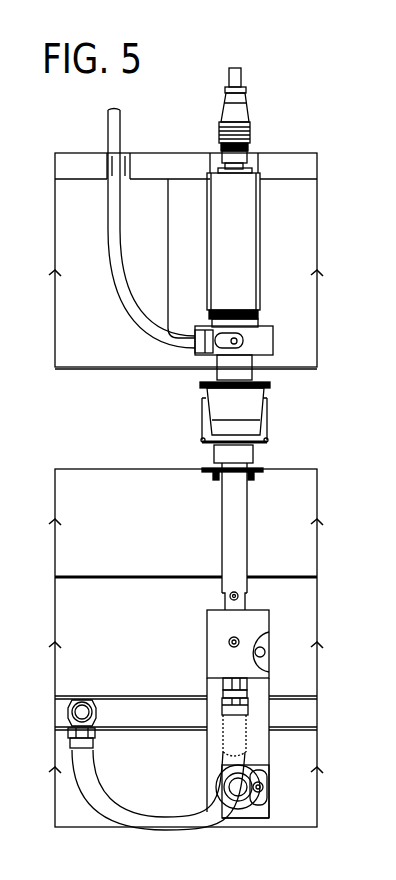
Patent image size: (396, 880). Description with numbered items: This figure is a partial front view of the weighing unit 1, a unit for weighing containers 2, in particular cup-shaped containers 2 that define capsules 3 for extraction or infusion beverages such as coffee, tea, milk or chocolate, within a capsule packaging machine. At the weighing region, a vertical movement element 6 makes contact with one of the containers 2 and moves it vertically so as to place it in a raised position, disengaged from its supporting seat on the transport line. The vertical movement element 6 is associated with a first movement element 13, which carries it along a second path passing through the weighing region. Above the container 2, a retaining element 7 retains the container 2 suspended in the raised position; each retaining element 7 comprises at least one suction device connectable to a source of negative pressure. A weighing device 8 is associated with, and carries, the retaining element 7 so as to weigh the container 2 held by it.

The weighing unit 1 is at (279, 120).
The container 2 is at (199, 392).
The capsule 3 is at (269, 393).
The vertical movement element 6 is at (261, 453).
The retaining element 7 is at (258, 381).
The weighing device 8 is at (268, 307).
The first movement element 13 is at (263, 509).